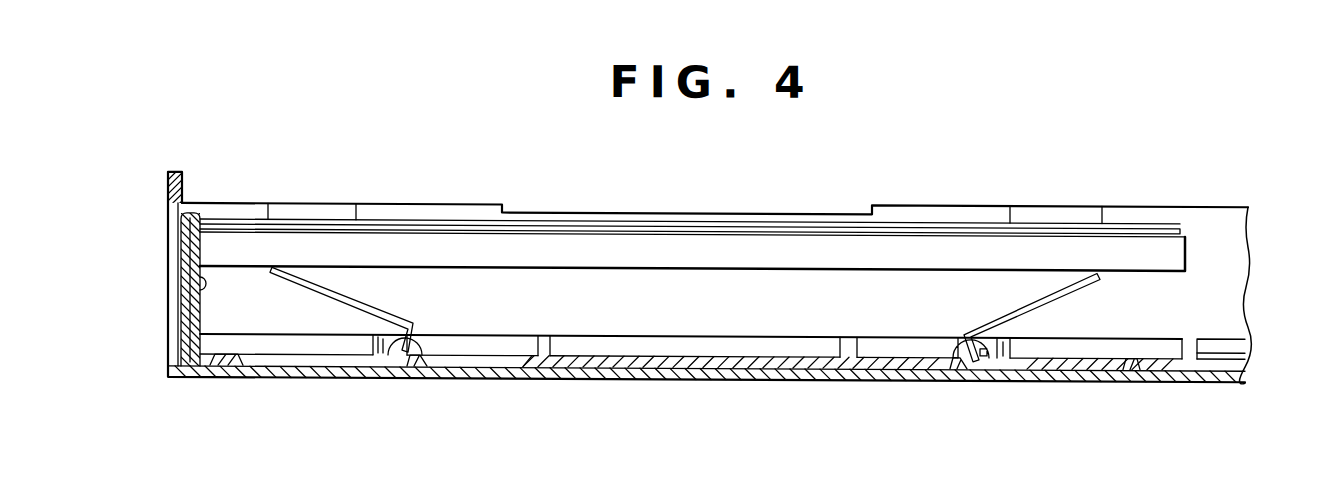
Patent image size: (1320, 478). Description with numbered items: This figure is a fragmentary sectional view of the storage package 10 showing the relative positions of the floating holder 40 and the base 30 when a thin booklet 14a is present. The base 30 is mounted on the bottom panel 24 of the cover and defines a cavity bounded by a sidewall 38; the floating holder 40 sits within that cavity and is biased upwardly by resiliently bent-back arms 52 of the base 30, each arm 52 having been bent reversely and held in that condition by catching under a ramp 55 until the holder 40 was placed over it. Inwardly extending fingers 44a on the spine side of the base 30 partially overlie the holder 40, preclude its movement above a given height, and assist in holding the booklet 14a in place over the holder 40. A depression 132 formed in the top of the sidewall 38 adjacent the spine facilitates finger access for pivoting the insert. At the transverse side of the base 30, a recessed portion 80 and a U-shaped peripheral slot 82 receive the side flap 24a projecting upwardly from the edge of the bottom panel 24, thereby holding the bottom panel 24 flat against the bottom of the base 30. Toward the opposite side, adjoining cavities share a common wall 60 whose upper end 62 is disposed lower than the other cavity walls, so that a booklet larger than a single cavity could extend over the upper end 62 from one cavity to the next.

The storage package 10 is at (268, 127).
The base 30 is at (173, 162).
The bottom panel 24 is at (340, 377).
The side flap 24a is at (180, 330).
The recessed portion 80 is at (173, 233).
The peripheral slot 82 is at (180, 257).
The sidewall 38 is at (195, 298).
The booklet 14a is at (457, 219).
The fingers 44a is at (330, 213).
The depression 132 is at (608, 214).
The floating holder 40 is at (758, 248).
The bent-back arm 52 is at (363, 301).
The ramp 55 is at (378, 346).
The upper end of common wall 62 is at (1190, 334).
The common wall 60 is at (1200, 348).